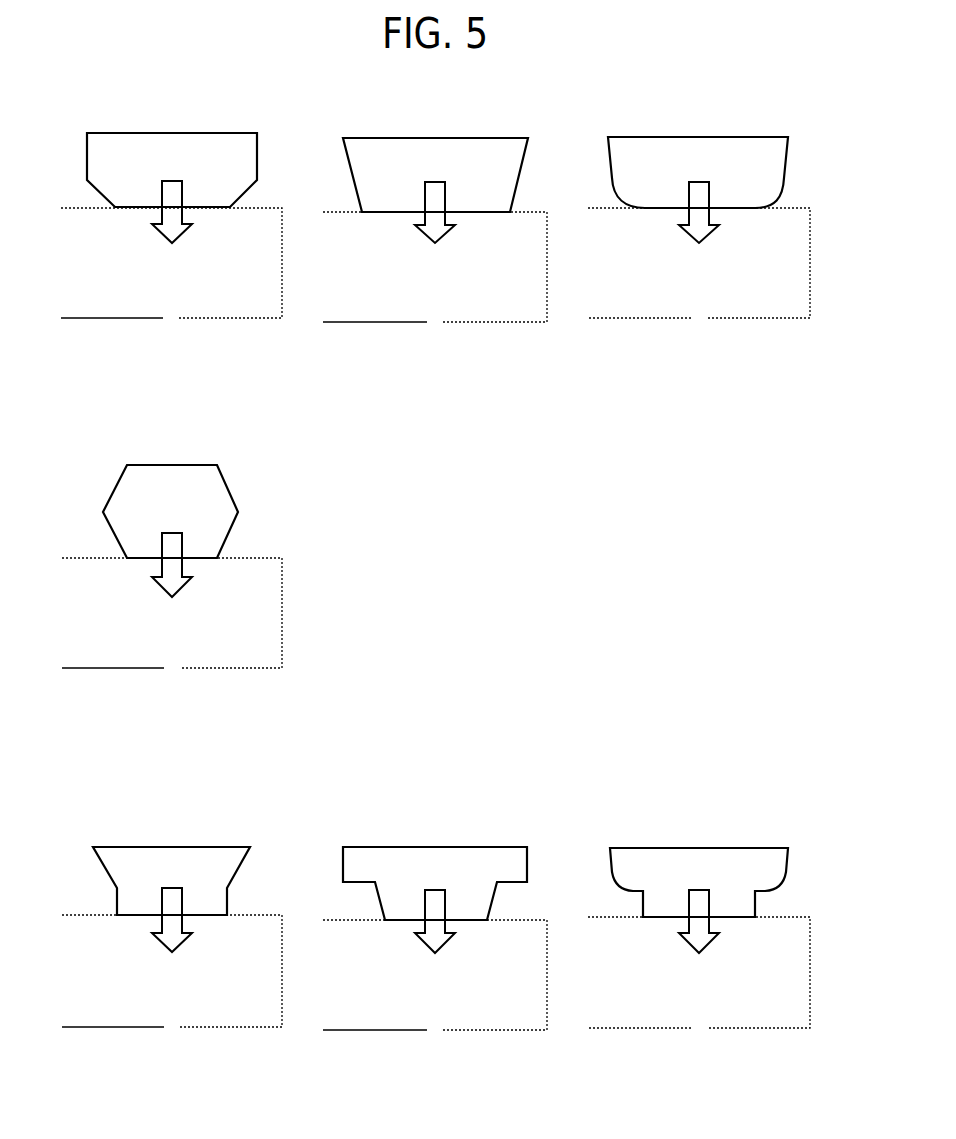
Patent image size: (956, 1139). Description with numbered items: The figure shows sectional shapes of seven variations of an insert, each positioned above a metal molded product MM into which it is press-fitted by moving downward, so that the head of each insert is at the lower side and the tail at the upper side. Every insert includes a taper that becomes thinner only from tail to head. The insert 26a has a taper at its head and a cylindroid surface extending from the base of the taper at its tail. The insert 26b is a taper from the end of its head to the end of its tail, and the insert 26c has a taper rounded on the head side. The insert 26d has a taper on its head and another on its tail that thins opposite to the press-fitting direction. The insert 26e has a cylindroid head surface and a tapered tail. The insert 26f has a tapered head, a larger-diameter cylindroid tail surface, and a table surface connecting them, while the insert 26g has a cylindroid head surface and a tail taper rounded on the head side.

The insert 26a is at (172, 135).
The insert 26b is at (435, 136).
The insert 26c is at (699, 144).
The insert 26d is at (172, 472).
The insert 26e is at (172, 846).
The insert 26f is at (435, 847).
The insert 26g is at (699, 846).
The metal molded product MM is at (94, 322).